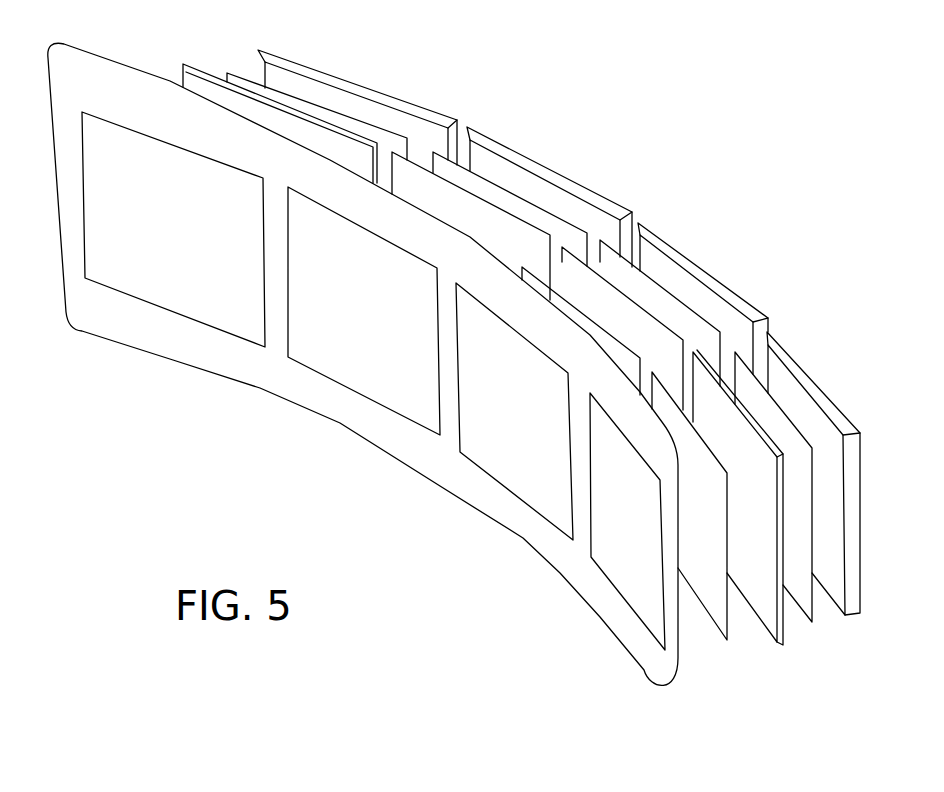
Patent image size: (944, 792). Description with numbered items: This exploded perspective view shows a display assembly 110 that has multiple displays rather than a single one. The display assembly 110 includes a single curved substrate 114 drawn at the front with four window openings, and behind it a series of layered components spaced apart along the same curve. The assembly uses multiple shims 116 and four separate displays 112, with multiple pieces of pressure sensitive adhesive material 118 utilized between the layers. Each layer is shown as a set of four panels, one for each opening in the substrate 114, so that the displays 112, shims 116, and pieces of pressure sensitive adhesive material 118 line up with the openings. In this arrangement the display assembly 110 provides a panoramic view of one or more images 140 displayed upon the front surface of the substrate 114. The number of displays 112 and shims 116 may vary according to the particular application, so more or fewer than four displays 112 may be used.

The display assembly 110 is at (653, 150).
The display 112 is at (807, 373).
The substrate 114 is at (648, 657).
The shim 116 is at (762, 600).
The pressure sensitive adhesive material 118 is at (710, 587).
The image 140 is at (638, 525).